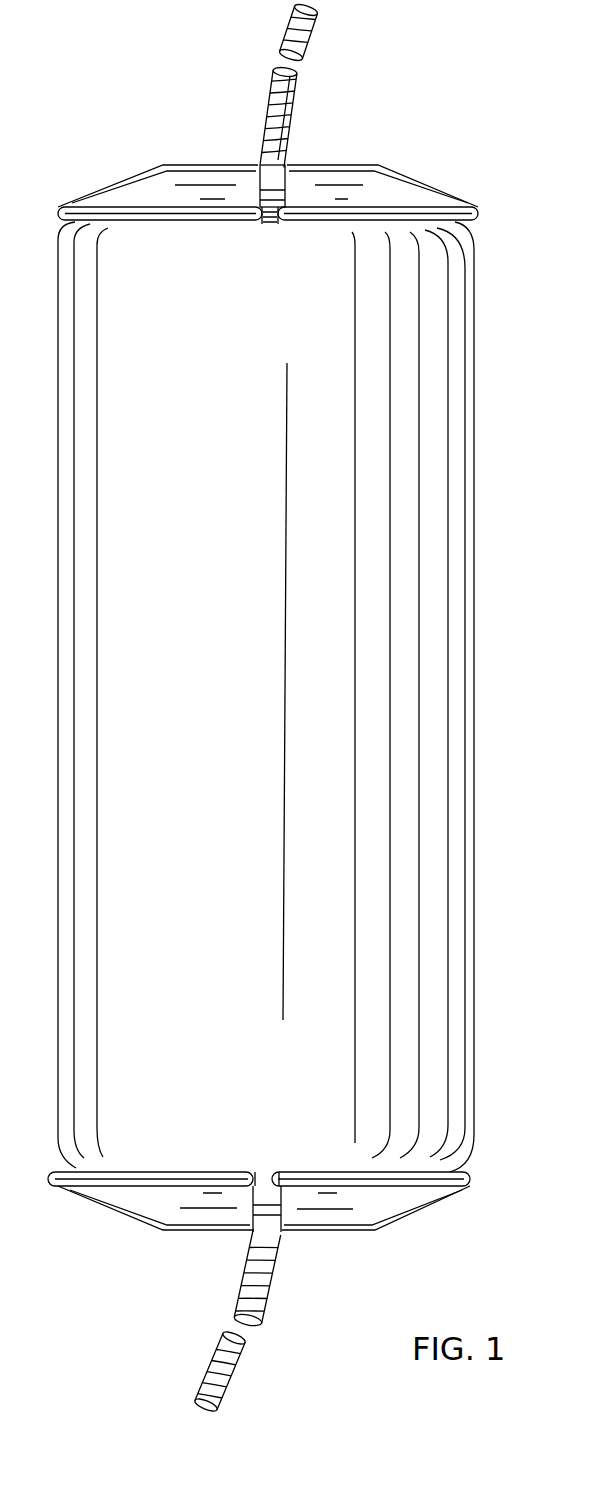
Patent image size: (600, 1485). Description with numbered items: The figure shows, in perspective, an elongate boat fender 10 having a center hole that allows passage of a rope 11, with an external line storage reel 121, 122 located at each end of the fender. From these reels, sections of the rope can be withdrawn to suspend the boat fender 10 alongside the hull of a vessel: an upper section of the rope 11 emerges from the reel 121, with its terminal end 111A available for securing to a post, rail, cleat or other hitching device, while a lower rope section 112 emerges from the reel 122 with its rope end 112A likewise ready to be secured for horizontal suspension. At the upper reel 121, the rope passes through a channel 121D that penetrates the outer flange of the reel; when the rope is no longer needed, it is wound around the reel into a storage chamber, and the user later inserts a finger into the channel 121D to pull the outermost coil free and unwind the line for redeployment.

The boat fender 10 is at (476, 629).
The rope 11 is at (289, 111).
The terminal end of rope section 111A is at (318, 20).
The line storage reel 121 is at (440, 193).
The channel 121D is at (286, 160).
The line storage reel 122 is at (426, 1207).
The rope section 112 is at (254, 1268).
The rope end 112A is at (224, 1396).